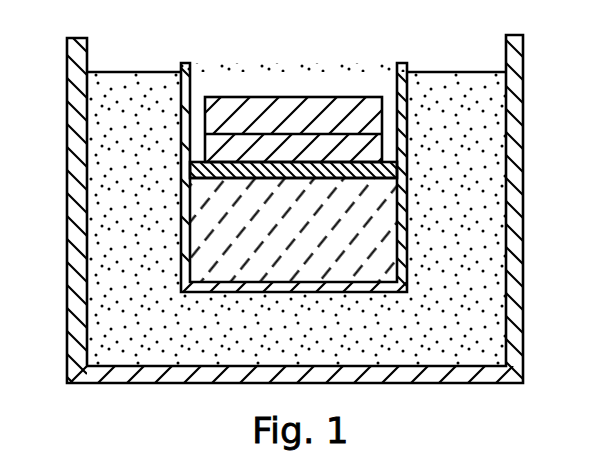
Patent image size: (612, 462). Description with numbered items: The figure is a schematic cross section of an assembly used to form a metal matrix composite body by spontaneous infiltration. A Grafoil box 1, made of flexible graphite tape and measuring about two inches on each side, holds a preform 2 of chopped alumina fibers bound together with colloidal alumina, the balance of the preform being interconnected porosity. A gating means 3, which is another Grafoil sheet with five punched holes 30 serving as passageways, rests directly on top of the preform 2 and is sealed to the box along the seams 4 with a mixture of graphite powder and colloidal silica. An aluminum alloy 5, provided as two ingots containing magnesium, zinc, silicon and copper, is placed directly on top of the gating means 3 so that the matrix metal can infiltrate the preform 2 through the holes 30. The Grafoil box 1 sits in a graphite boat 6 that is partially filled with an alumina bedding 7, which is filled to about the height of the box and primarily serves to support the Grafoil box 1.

The Grafoil box 1 is at (399, 208).
The preform 2 is at (387, 267).
The gating means 3 is at (198, 180).
The seams 4 is at (196, 160).
The aluminum alloy 5 is at (283, 96).
The graphite boat 6 is at (523, 67).
The alumina bedding 7 is at (493, 128).
The holes 30 is at (226, 163).